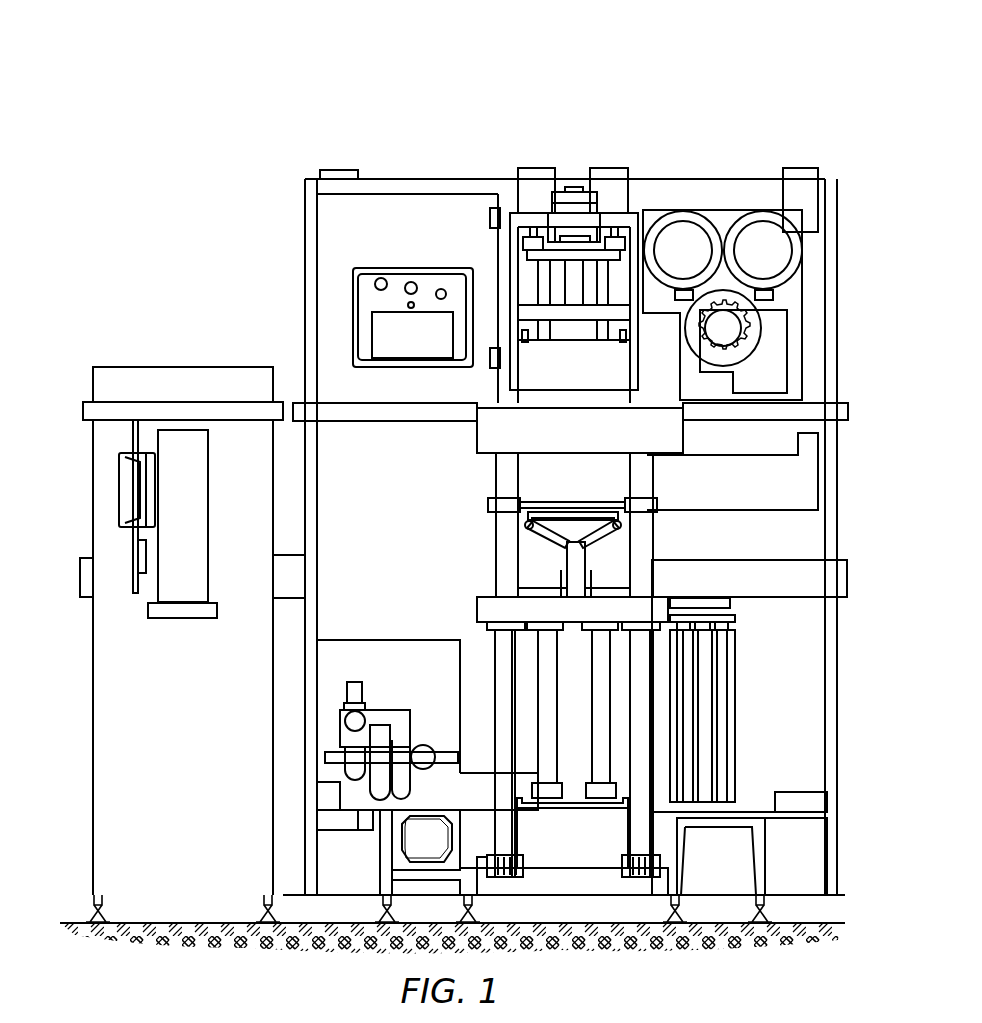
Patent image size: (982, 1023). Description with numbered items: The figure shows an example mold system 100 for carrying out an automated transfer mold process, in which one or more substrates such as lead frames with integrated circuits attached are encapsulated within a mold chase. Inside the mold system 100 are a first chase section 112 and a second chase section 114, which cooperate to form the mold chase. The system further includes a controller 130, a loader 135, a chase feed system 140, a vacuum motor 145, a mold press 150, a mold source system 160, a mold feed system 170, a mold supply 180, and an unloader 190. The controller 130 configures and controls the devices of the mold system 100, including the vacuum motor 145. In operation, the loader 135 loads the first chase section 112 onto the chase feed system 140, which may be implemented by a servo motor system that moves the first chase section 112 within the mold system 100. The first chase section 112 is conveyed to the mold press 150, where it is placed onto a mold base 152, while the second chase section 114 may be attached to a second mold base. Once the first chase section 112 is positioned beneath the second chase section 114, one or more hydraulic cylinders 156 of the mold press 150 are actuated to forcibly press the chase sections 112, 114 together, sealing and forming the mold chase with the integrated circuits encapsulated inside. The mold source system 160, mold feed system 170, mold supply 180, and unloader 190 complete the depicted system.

The mold system 100 is at (223, 61).
The first chase section 112 is at (540, 485).
The second chase section 114 is at (553, 377).
The controller 130 is at (412, 212).
The loader 135 is at (173, 620).
The chase feed system 140 is at (113, 468).
The vacuum motor 145 is at (332, 727).
The mold press 150 is at (567, 752).
The mold base 152 is at (577, 518).
The hydraulic cylinders 156 is at (572, 577).
The mold source system 160 is at (528, 310).
The mold feed system 170 is at (722, 280).
The mold supply 180 is at (785, 250).
The unloader 190 is at (800, 483).